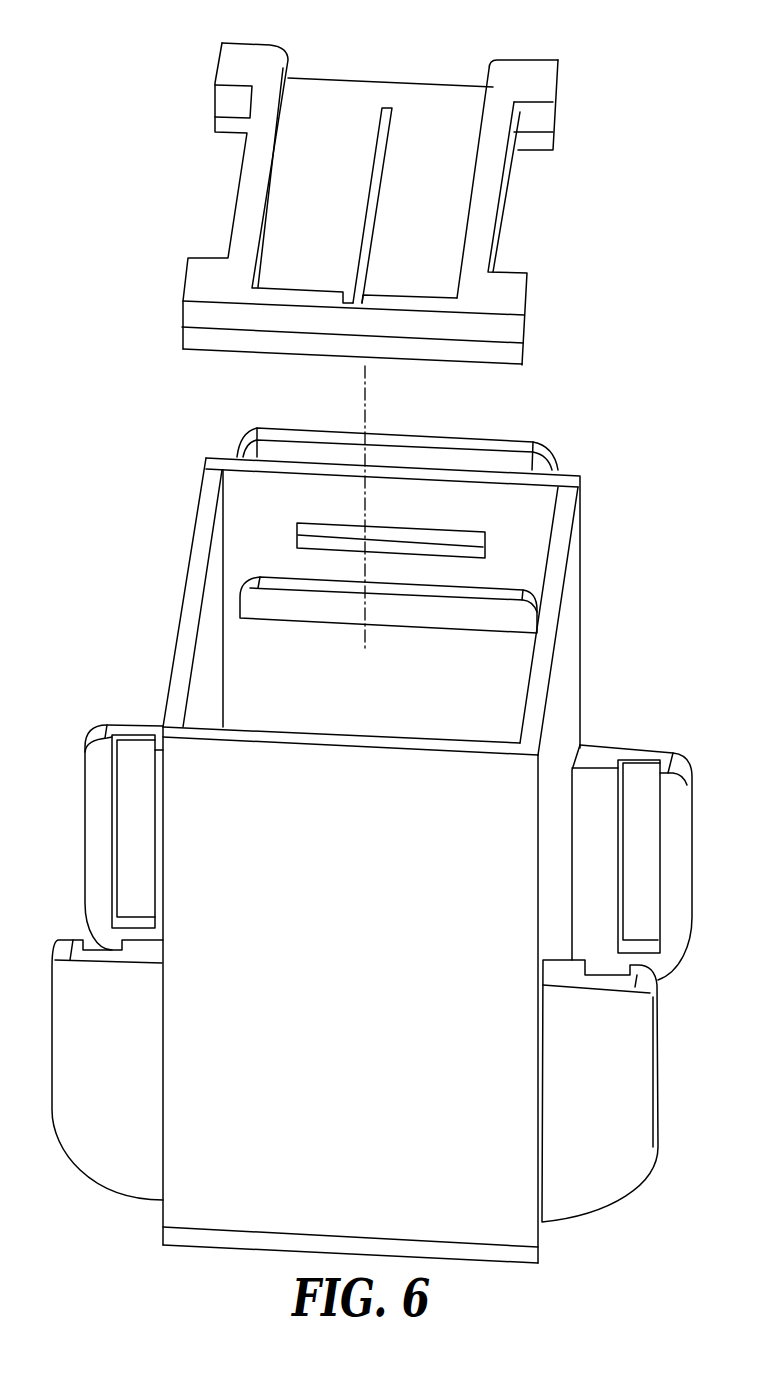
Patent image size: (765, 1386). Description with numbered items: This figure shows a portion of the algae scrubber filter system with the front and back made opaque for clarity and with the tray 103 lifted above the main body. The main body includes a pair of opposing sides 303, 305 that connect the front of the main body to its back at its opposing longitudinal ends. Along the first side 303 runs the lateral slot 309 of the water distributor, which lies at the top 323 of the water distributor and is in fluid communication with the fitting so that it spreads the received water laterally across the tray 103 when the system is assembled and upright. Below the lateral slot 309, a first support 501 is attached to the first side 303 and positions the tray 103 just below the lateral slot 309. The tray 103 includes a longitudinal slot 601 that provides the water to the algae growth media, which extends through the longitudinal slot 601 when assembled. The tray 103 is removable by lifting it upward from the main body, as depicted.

The tray 103 is at (532, 82).
The longitudinal slot 601 is at (388, 100).
The first side 303 is at (248, 522).
The top of the water distributor 323 is at (293, 452).
The lateral slot 309 is at (443, 535).
The first support 501 is at (498, 592).
The second side 305 is at (500, 1178).